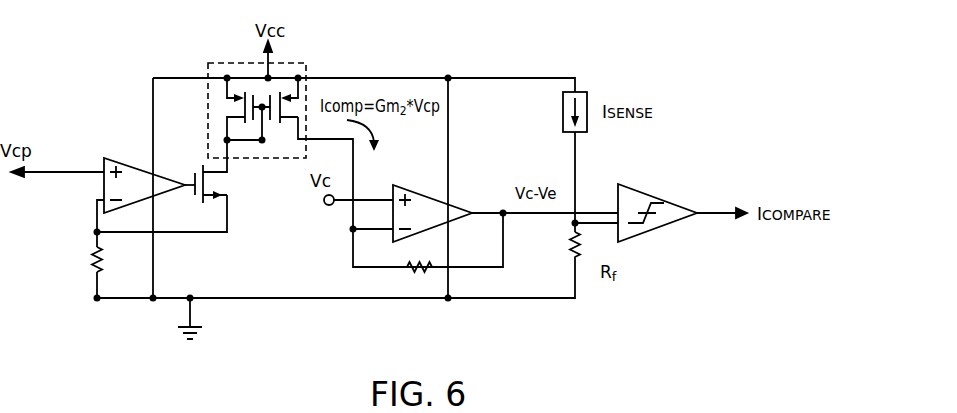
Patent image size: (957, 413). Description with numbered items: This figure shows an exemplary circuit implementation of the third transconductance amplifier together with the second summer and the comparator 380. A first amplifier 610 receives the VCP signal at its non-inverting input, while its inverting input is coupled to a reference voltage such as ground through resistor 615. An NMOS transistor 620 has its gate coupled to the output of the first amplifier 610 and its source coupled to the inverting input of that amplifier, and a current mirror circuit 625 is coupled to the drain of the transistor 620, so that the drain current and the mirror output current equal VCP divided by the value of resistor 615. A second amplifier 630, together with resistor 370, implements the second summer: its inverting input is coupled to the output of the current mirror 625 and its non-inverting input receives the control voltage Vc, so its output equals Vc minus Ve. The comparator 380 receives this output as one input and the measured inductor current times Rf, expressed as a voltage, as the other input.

The first amplifier 610 is at (133, 158).
The resistor R4 615 is at (62, 264).
The NMOS transistor 620 is at (235, 187).
The current mirror circuit 625 is at (220, 63).
The second amplifier 630 is at (457, 203).
The resistor 370 is at (410, 273).
The comparator 380 is at (657, 186).